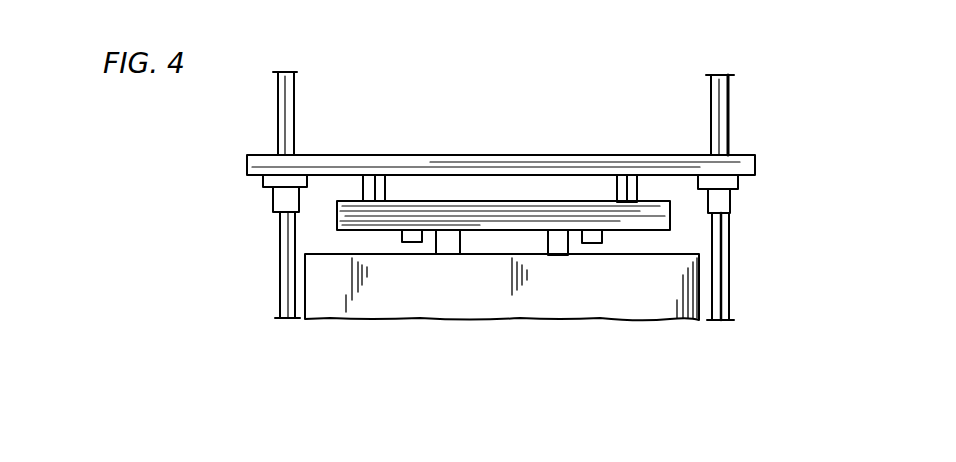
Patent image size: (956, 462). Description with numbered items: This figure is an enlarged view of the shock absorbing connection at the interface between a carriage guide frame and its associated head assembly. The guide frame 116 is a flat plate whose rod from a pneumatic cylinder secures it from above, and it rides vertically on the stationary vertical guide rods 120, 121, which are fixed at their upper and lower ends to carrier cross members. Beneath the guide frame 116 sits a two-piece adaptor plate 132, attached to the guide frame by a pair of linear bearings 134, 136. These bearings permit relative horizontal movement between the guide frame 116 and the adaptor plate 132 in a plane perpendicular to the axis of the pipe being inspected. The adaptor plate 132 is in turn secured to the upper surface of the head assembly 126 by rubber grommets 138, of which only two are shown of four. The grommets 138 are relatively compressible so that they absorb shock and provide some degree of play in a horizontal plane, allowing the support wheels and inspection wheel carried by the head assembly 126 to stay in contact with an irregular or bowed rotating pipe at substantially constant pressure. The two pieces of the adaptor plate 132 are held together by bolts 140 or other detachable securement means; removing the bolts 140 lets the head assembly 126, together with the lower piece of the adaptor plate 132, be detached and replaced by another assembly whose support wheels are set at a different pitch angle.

The guide frame 116 is at (540, 157).
The vertical guide rod 120 is at (287, 117).
The vertical guide rod 121 is at (728, 138).
The head assembly 126 is at (676, 254).
The two-piece adaptor plate 132 is at (440, 201).
The linear bearing 134 is at (363, 190).
The linear bearing 136 is at (640, 196).
The rubber grommet 138 is at (466, 256).
The bolt 140 is at (400, 242).